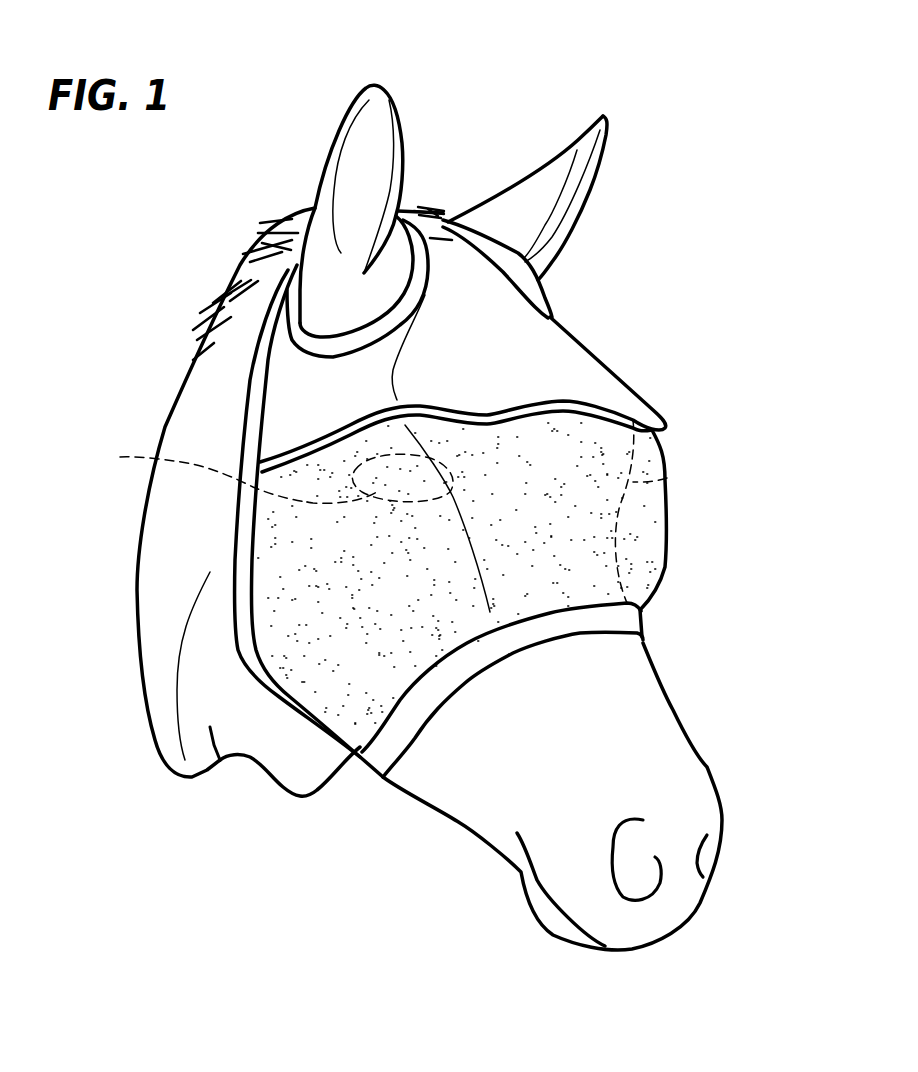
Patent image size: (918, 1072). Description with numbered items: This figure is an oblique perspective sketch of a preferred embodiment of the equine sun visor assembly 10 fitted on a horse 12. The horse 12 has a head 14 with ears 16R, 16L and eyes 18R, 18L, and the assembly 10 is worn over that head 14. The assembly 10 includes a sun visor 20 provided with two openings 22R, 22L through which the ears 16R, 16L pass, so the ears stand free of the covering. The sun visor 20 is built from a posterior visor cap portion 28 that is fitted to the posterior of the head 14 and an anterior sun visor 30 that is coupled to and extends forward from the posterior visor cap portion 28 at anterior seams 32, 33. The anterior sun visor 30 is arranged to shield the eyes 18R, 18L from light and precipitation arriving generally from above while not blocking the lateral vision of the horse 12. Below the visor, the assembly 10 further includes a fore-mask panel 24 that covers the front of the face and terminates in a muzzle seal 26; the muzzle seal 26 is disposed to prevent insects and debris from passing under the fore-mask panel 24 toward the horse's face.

The equine sun visor assembly 10 is at (436, 455).
The horse 12 is at (222, 772).
The head 14 is at (637, 673).
The right ear 16R is at (390, 97).
The left ear 16L is at (601, 116).
The right eye 18R is at (281, 518).
The left eye 18L is at (667, 478).
The sun visor 20 is at (582, 343).
The right ear opening 22R is at (320, 347).
The left ear opening 22L is at (540, 287).
The fore-mask panel 24 is at (667, 571).
The muzzle seal 26 is at (645, 620).
The posterior visor cap portion 28 is at (430, 209).
The anterior sun visor 30 is at (491, 370).
The anterior seam 32 is at (452, 240).
The anterior seam 33 is at (293, 300).